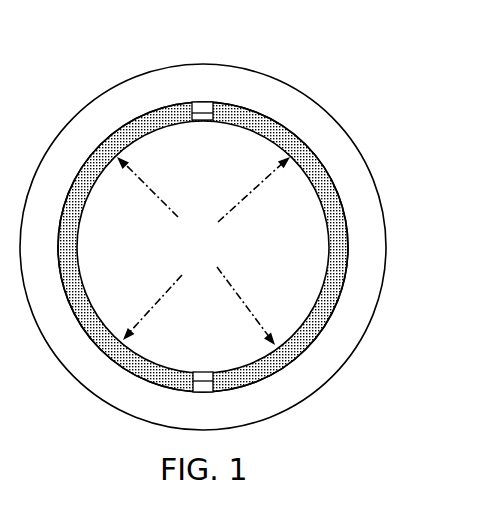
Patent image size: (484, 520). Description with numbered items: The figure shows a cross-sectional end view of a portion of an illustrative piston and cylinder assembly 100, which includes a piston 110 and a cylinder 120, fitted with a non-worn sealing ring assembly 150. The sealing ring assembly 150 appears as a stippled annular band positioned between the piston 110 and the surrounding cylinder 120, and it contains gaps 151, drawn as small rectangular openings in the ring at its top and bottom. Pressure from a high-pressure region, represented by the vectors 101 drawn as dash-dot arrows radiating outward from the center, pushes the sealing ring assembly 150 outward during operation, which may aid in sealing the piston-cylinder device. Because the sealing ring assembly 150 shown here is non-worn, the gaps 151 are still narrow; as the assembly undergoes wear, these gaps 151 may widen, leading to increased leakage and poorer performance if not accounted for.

The piston and cylinder assembly 100 is at (106, 40).
The vectors 101 is at (222, 258).
The piston 110 is at (298, 209).
The cylinder 120 is at (311, 97).
The sealing ring assembly 150 is at (106, 364).
The gaps 151 is at (209, 106).